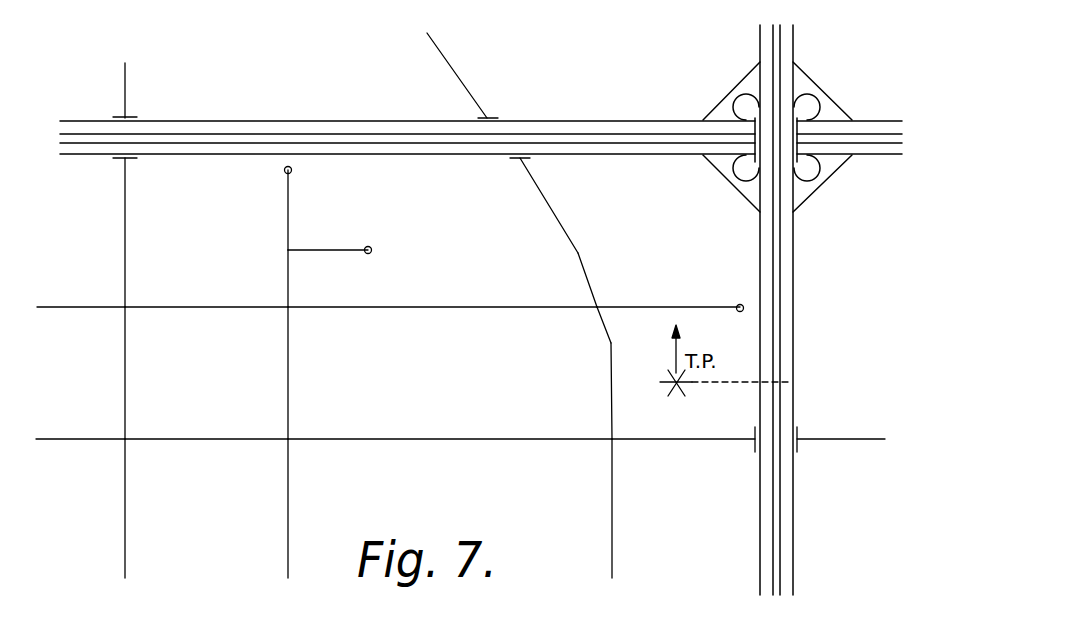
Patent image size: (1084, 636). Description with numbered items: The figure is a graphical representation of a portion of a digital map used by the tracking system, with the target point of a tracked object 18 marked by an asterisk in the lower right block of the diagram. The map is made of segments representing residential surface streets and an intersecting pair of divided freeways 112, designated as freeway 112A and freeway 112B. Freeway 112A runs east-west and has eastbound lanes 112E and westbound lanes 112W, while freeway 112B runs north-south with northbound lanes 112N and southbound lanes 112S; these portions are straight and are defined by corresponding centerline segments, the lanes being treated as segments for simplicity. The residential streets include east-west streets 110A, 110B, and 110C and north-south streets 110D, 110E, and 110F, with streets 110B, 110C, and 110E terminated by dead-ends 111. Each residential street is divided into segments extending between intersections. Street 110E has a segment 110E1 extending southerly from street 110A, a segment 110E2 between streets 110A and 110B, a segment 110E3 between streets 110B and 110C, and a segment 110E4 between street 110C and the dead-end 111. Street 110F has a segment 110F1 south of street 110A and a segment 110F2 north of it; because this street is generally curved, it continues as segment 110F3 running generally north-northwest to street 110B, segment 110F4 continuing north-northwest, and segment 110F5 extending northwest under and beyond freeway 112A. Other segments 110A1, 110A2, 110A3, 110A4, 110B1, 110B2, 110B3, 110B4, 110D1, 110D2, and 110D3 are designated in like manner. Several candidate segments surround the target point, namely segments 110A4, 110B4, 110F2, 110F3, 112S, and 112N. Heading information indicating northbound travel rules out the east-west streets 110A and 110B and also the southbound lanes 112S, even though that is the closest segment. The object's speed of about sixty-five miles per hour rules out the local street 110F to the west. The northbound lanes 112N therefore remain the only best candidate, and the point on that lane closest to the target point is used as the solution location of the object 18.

The object 18 is at (788, 382).
The east-west street 110A is at (460, 417).
The segment of street 110A 110A1 is at (40, 438).
The segment of street 110A 110A2 is at (242, 437).
The segment of street 110A 110A3 is at (437, 437).
The segment of street 110A 110A4 is at (723, 439).
The east-west street 110B is at (388, 298).
The segment of street 110B 110B1 is at (40, 307).
The segment of street 110B 110B2 is at (243, 306).
The segment of street 110B 110B3 is at (438, 307).
The segment of street 110B 110B4 is at (718, 307).
The east-west street 110C is at (303, 253).
The north-south street 110D is at (136, 320).
The segment of street 110D 110D1 is at (179, 508).
The segment of street 110D 110D2 is at (127, 396).
The segment of street 110D 110D3 is at (127, 237).
The north-south street 110E is at (283, 374).
The segment of street 110E 110E1 is at (235, 508).
The segment of street 110E 110E2 is at (287, 357).
The segment of street 110E 110E3 is at (287, 270).
The segment of street 110E 110E4 is at (287, 197).
The north-south street 110F is at (519, 305).
The segment of street 110F 110F1 is at (612, 465).
The segment of street 110F 110F2 is at (612, 397).
The segment of street 110F 110F3 is at (603, 328).
The segment of street 110F 110F4 is at (577, 255).
The segment of street 110F 110F5 is at (555, 203).
The dead-end 111 is at (290, 174).
The freeways 112 is at (481, 310).
The freeway 112A is at (560, 120).
The freeway 112B is at (793, 262).
The eastbound lanes 112E is at (473, 155).
The northbound lanes 112N is at (833, 310).
The southbound lanes 112S is at (760, 507).
The westbound lanes 112W is at (407, 115).